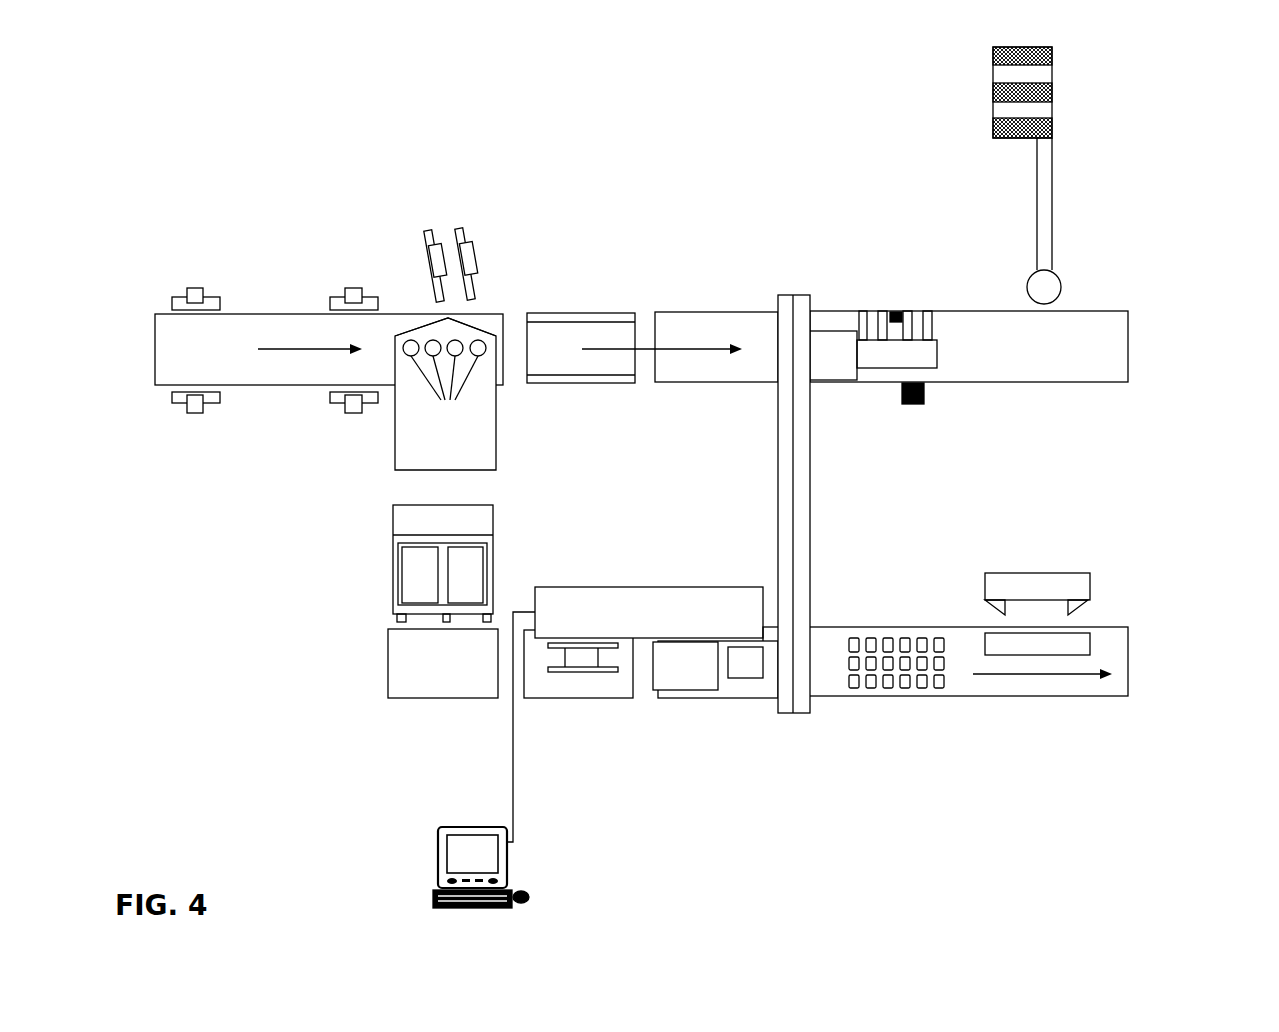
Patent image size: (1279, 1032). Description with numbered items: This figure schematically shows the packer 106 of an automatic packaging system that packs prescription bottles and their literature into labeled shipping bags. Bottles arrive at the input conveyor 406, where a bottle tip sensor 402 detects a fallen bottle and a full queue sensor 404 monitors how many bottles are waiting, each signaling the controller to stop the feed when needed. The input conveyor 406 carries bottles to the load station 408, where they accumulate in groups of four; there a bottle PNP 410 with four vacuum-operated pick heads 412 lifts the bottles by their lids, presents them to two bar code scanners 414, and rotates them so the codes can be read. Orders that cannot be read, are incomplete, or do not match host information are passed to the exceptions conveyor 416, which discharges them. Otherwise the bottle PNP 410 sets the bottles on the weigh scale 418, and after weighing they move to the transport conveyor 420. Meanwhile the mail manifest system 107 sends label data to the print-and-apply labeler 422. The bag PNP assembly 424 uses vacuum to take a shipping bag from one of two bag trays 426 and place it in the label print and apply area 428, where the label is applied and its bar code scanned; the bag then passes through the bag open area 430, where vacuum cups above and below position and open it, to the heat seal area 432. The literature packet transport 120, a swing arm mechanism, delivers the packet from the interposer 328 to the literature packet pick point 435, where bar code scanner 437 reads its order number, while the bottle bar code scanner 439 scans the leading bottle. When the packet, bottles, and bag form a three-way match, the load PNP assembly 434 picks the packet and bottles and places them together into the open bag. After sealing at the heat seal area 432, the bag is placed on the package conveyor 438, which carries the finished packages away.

The packer 106 is at (640, 134).
The mail manifest system 107 is at (438, 852).
The literature packet transport 120 is at (955, 123).
The interposer 328 is at (1045, 58).
The bottle tip sensor 402 is at (195, 288).
The full queue sensor 404 is at (353, 288).
The input conveyor 406 is at (262, 332).
The load station 408 is at (482, 323).
The bottle PNP 410 is at (400, 462).
The vacuum-operated pick heads 412 is at (444, 381).
The bar code scanners 414 is at (462, 228).
The exceptions conveyor 416 is at (1098, 318).
The weigh scale 418 is at (560, 385).
The transport conveyor 420 is at (673, 335).
The print-and-apply labeler 422 is at (637, 593).
The bag PNP assembly 424 is at (397, 560).
The bag trays 426 is at (400, 667).
The label print and apply area 428 is at (745, 693).
The bag open area 430 is at (860, 626).
The heat seal area 432 is at (1083, 635).
The load PNP assembly 434 is at (838, 367).
The literature packet pick point 435 is at (925, 310).
The bar code scanner 437 is at (898, 312).
The package conveyor 438 is at (1095, 683).
The bottle bar code scanner 439 is at (908, 405).